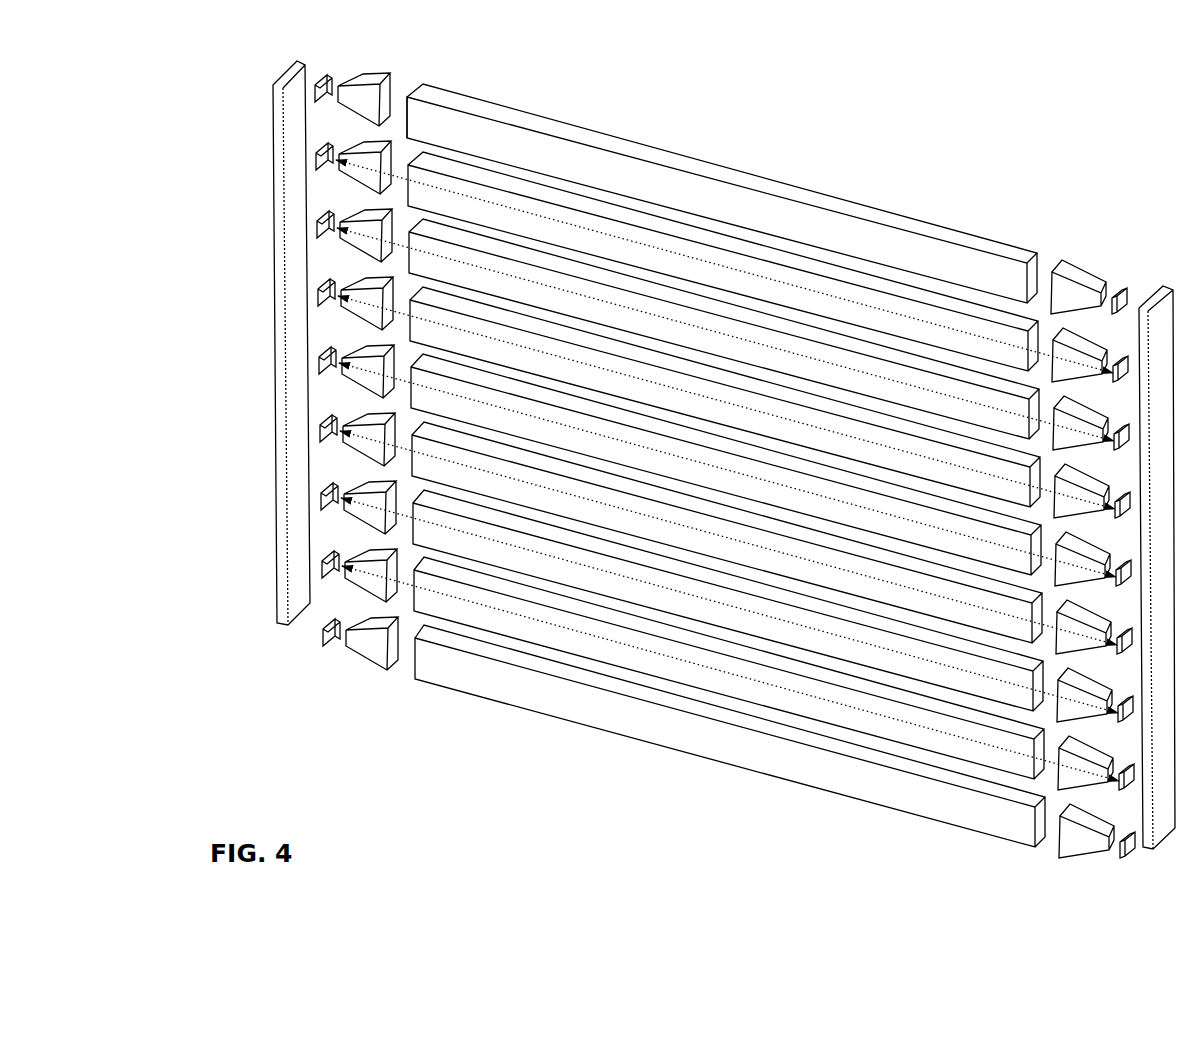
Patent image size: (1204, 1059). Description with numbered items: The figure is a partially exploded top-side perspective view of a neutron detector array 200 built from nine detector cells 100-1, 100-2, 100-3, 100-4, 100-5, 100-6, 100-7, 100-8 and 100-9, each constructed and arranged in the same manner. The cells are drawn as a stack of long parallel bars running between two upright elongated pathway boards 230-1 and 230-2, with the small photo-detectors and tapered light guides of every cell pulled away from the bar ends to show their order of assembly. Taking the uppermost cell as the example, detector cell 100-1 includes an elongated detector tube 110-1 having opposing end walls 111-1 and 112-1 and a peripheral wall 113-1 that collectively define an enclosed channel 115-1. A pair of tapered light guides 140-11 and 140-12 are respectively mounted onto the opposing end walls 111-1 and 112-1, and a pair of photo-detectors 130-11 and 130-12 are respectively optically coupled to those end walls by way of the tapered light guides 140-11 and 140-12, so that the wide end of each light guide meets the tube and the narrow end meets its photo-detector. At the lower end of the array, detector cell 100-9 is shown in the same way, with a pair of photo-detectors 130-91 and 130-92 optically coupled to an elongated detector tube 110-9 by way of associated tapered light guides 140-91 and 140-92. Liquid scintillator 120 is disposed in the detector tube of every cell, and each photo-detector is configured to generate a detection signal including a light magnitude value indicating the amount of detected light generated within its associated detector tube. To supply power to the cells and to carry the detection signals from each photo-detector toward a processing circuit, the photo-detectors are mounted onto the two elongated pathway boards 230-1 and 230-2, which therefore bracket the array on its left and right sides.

The neutron detector array 200 is at (1099, 181).
The elongated pathway board 230-1 is at (284, 628).
The elongated pathway board 230-2 is at (1157, 286).
The detector cell 100-1 is at (721, 187).
The detector cell 100-2 is at (722, 259).
The detector cell 100-3 is at (776, 348).
The detector cell 100-4 is at (776, 416).
The detector cell 100-5 is at (776, 484).
The detector cell 100-6 is at (776, 552).
The detector cell 100-7 is at (776, 620).
The detector cell 100-8 is at (776, 688).
The detector cell 100-9 is at (729, 739).
The elongated detector tube 110-1 is at (718, 191).
The elongated detector tube 110-9 is at (651, 744).
The end wall 111-1 is at (402, 103).
The end wall 112-1 is at (1033, 283).
The peripheral wall 113-1 is at (594, 134).
The enclosed channel 115-1 is at (638, 173).
The liquid scintillator 120 is at (692, 252).
The photo-detector 130-11 is at (336, 77).
The tapered light guide 140-11 is at (396, 77).
The photo-detector 130-12 is at (1060, 257).
The tapered light guide 140-12 is at (1123, 285).
The tapered light guide 140-91 is at (389, 676).
The photo-detector 130-91 is at (329, 650).
The tapered light guide 140-92 is at (1058, 853).
The photo-detector 130-92 is at (1118, 858).